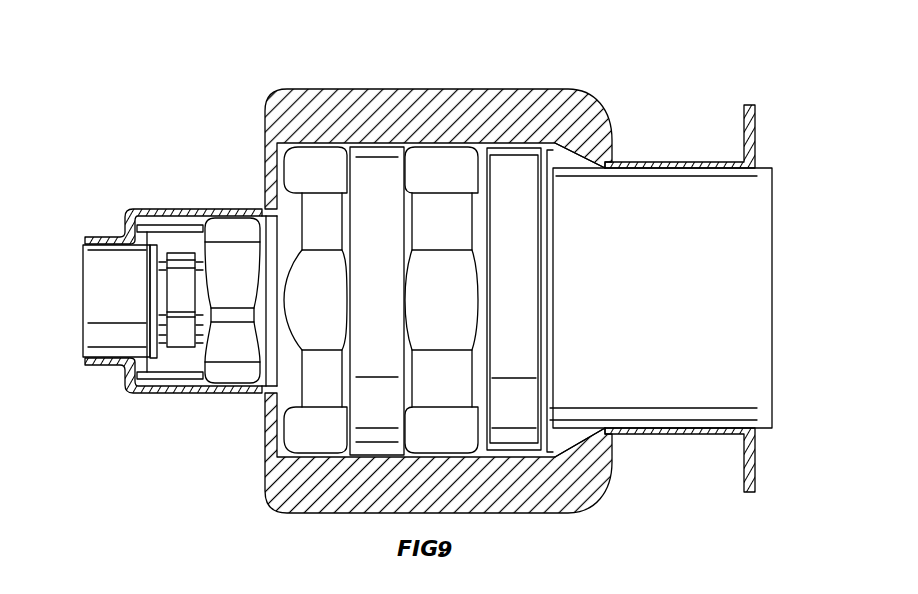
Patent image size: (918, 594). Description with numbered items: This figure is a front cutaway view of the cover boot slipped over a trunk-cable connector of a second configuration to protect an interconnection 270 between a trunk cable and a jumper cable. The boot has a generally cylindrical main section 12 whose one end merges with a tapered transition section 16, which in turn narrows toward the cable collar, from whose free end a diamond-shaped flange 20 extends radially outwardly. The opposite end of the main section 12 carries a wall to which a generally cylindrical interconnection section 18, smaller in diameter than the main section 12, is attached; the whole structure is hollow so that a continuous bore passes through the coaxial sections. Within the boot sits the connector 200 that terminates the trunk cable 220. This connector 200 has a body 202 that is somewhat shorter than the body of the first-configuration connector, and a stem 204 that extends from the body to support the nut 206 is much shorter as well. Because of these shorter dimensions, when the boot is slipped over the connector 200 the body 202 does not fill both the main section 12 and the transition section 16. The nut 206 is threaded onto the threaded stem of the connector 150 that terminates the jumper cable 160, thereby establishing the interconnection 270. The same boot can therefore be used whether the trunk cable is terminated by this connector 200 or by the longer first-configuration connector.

The main section 12 is at (375, 143).
The tapered transition section 16 is at (600, 152).
The interconnection section 18 is at (155, 228).
The diamond-shaped flange 20 is at (752, 136).
The connector 150 is at (180, 282).
The jumper cable 160 is at (100, 284).
The connector 200 is at (507, 77).
The body 202 is at (523, 168).
The stem 204 is at (262, 395).
The nut 206 is at (234, 253).
The trunk cable 220 is at (773, 253).
The interconnection 270 is at (207, 178).